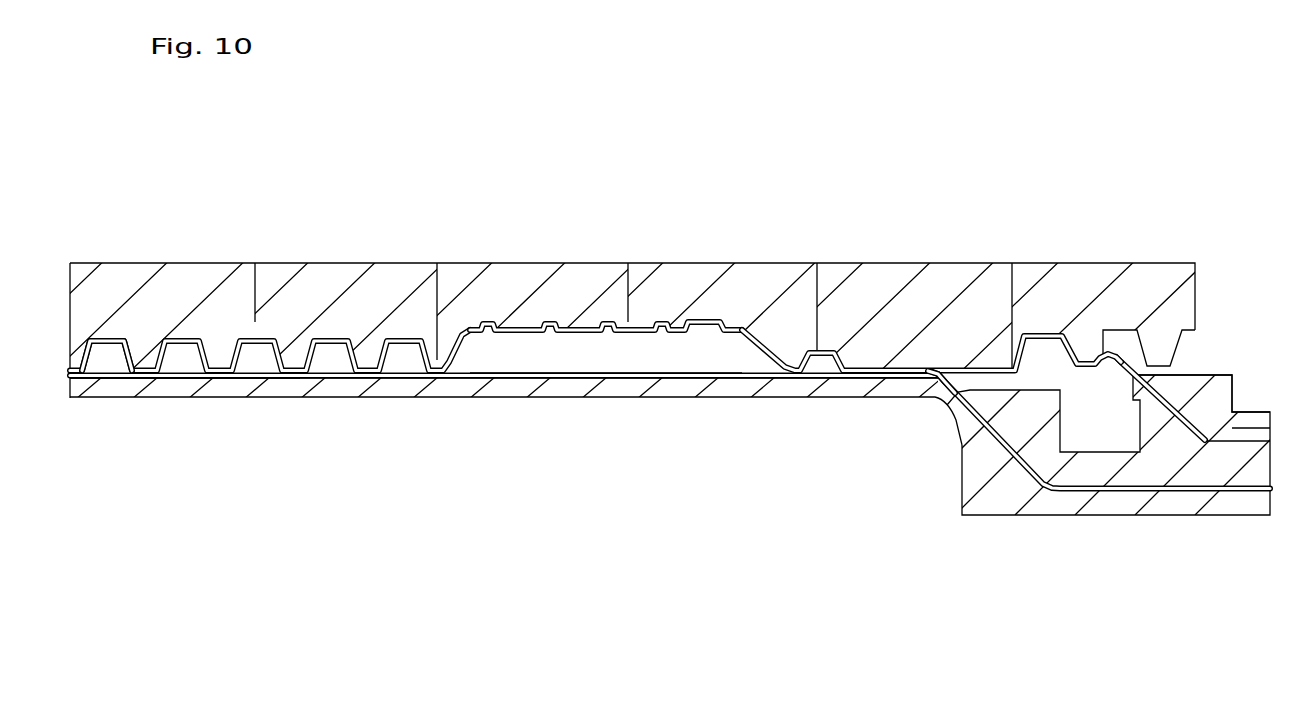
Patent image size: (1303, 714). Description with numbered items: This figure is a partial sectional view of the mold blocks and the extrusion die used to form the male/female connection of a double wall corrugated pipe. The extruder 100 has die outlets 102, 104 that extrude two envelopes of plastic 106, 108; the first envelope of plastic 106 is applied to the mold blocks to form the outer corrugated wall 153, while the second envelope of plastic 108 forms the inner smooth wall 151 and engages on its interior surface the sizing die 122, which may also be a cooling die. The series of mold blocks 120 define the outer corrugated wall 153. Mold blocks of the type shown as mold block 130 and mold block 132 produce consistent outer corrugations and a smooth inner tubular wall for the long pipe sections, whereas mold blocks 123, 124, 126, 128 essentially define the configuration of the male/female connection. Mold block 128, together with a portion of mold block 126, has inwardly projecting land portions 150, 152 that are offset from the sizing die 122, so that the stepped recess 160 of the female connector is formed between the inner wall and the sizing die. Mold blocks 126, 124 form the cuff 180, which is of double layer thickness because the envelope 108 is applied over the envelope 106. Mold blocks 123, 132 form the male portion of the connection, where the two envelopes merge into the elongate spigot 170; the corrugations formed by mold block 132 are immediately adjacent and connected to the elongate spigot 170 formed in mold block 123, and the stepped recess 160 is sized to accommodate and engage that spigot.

The extruder 100 is at (1162, 548).
The die outlet 102 is at (1185, 376).
The die outlet 104 is at (942, 413).
The envelope of plastic 106 is at (1135, 328).
The second envelope of plastic 108 is at (940, 380).
The mold blocks 120 is at (870, 226).
The sizing die 122 is at (603, 395).
The mold block 123 is at (930, 290).
The mold block 124 is at (705, 275).
The mold block 126 is at (555, 297).
The mold block 128 is at (400, 285).
The mold block 130 is at (135, 280).
The mold block 132 is at (1062, 300).
The land portion 150 is at (372, 352).
The inner smooth wall 151 is at (178, 378).
The land portion 152 is at (447, 352).
The outer corrugated wall 153 is at (137, 366).
The stepped recess 160 is at (363, 375).
The elongate spigot 170 is at (873, 373).
The cuff 180 is at (565, 342).